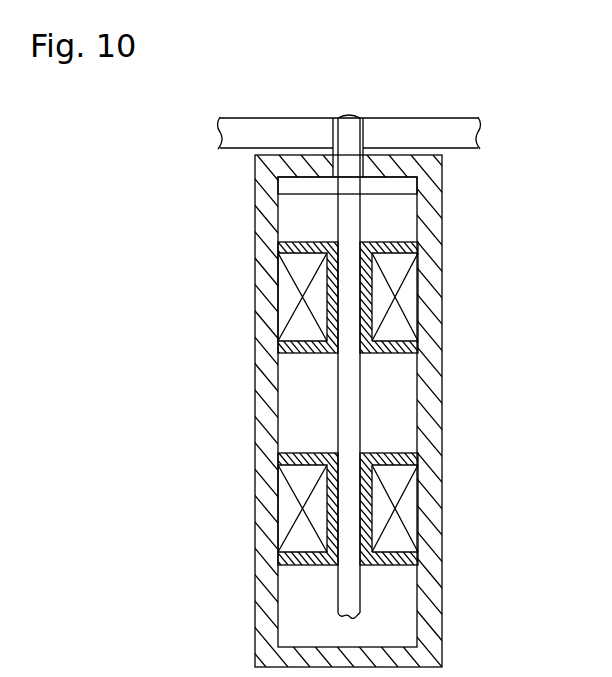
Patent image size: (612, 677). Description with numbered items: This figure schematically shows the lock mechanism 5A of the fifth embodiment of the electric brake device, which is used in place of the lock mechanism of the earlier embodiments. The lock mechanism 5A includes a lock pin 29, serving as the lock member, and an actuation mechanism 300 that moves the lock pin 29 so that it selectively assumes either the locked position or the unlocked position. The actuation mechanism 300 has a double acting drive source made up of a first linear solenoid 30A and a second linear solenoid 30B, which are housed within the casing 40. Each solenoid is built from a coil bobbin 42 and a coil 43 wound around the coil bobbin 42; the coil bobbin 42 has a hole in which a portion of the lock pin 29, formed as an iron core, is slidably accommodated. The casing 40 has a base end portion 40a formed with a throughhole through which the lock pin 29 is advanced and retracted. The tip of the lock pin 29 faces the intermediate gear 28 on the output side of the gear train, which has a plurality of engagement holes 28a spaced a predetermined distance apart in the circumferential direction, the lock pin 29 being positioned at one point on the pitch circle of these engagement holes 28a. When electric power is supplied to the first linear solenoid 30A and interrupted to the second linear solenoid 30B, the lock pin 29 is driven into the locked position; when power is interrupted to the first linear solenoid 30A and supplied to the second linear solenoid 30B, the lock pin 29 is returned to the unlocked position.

The lock mechanism 5A is at (306, 411).
The intermediate gear 28 is at (415, 130).
The engagement hole 28a is at (335, 118).
The lock pin 29 is at (348, 138).
The casing 40 is at (267, 580).
The base end portion 40a is at (335, 176).
The actuation mechanism 300 is at (312, 382).
The first linear solenoid 30A is at (270, 279).
The second linear solenoid 30B is at (270, 494).
The coil bobbin 42 is at (405, 245).
The coil 43 is at (405, 298).